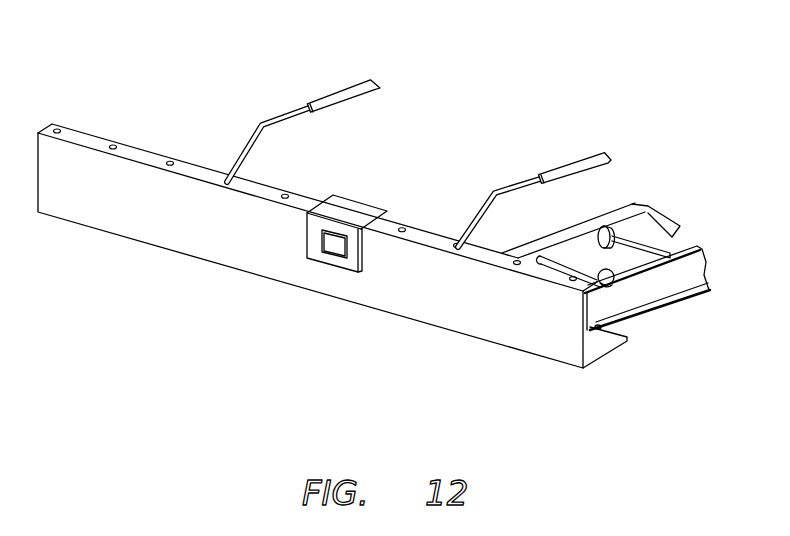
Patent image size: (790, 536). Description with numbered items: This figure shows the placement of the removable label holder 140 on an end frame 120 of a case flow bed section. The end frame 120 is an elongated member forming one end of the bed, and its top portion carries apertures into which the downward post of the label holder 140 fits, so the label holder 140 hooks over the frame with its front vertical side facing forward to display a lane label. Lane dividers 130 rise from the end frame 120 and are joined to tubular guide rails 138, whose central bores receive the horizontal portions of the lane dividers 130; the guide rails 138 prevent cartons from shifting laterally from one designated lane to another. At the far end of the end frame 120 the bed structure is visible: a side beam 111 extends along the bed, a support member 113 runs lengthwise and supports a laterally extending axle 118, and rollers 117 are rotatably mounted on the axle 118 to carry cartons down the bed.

The side beam 111 is at (640, 293).
The support member 113 is at (537, 233).
The roller 117 is at (617, 227).
The axle 118 is at (660, 248).
The end frame 120 is at (343, 362).
The lane divider 130 is at (285, 90).
The tubular guide rail 138 is at (340, 88).
The label holder 140 is at (372, 198).